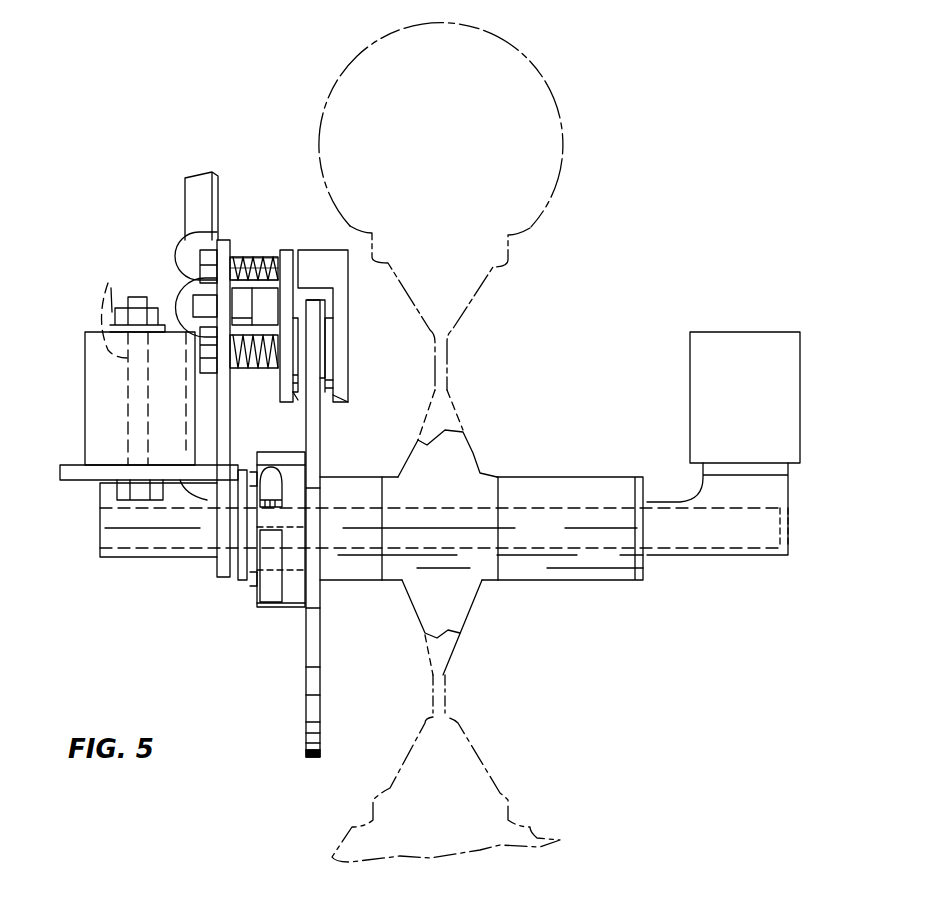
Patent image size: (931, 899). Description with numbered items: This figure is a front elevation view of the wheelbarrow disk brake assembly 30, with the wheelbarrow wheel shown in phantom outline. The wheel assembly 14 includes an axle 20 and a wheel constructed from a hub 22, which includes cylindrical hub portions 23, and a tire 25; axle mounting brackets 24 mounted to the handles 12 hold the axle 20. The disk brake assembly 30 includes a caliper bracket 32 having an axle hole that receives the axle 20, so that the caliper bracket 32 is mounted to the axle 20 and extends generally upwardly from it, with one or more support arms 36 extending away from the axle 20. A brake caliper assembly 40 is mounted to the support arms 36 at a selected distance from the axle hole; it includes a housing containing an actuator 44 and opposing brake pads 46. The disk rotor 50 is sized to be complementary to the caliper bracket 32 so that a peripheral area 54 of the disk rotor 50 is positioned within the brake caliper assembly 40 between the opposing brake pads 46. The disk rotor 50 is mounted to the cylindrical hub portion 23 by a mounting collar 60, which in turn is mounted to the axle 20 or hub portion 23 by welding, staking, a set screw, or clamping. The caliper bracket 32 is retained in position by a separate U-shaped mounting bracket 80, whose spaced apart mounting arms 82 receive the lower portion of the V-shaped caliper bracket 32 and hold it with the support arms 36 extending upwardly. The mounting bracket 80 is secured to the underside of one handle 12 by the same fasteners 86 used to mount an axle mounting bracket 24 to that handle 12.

The handle 12 is at (85, 392).
The wheel assembly 14 is at (600, 362).
The axle 20 is at (167, 533).
The hub 22 is at (475, 292).
The cylindrical hub portion 23 is at (548, 477).
The axle mounting bracket 24 is at (103, 492).
The tire 25 is at (553, 202).
The wheelbarrow disk brake assembly 30 is at (236, 604).
The caliper bracket 32 is at (225, 410).
The support arm 36 is at (223, 253).
The brake caliper assembly 40 is at (323, 250).
The actuator 44 is at (270, 307).
The brake pads 46 is at (325, 400).
The disk rotor 50 is at (305, 703).
The peripheral area 54 is at (315, 312).
The mounting collar 60 is at (268, 602).
The U-shaped mounting bracket 80 is at (60, 472).
The mounting arms 82 is at (93, 470).
The fasteners 86 is at (112, 290).